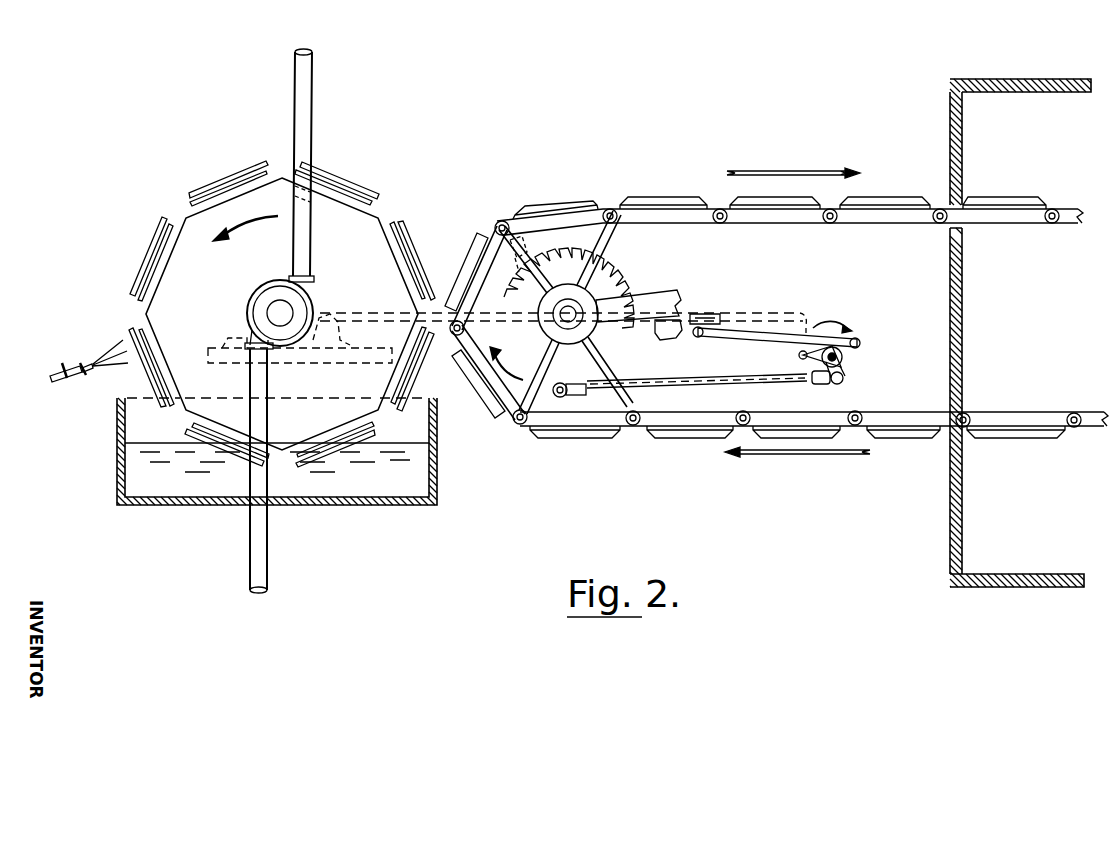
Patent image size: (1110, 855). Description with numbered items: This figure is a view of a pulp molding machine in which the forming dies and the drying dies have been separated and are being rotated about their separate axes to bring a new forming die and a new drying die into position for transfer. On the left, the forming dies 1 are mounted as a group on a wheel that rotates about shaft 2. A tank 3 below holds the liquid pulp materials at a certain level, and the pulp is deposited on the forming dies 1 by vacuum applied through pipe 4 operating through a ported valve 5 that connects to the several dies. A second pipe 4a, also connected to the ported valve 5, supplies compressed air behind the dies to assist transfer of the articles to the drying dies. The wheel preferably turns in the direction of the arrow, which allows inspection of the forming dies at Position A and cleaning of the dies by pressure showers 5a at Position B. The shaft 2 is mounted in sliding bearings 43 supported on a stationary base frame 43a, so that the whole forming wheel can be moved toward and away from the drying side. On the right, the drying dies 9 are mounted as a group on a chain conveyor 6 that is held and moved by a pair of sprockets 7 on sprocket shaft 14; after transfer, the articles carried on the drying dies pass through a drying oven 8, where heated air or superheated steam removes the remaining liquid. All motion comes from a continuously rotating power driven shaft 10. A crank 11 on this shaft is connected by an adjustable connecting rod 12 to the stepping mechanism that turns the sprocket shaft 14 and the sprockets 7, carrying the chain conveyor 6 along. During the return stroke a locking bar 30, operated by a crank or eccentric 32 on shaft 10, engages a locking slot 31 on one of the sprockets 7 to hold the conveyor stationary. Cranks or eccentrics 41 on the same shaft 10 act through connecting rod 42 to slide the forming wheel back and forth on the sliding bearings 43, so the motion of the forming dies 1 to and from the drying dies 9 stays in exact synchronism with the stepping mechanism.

The forming dies 1 is at (153, 255).
The Position A is at (282, 311).
The shaft 2 is at (276, 307).
The ported valve 5 is at (260, 322).
The pipe 4 is at (247, 557).
The pipe 4a is at (312, 109).
The tank 3 is at (117, 413).
The pressure showers 5a is at (58, 373).
The Position B is at (110, 346).
The sliding bearings 43 is at (350, 338).
The stationary base frame 43a is at (298, 362).
The chain conveyor 6 is at (888, 225).
The drying dies 9 is at (920, 198).
The sprocket shaft 14 is at (563, 297).
The sprockets 7 is at (651, 292).
The locking slot 31 is at (672, 333).
The locking bar 30 is at (710, 316).
The connecting rod 42 is at (758, 316).
The crank or eccentric 32 is at (804, 318).
The cranks or eccentrics 41 is at (800, 356).
The power driven shaft 10 is at (845, 357).
The crank 11 is at (845, 376).
The adjustable connecting rod 12 is at (712, 389).
The drying oven 8 is at (963, 286).